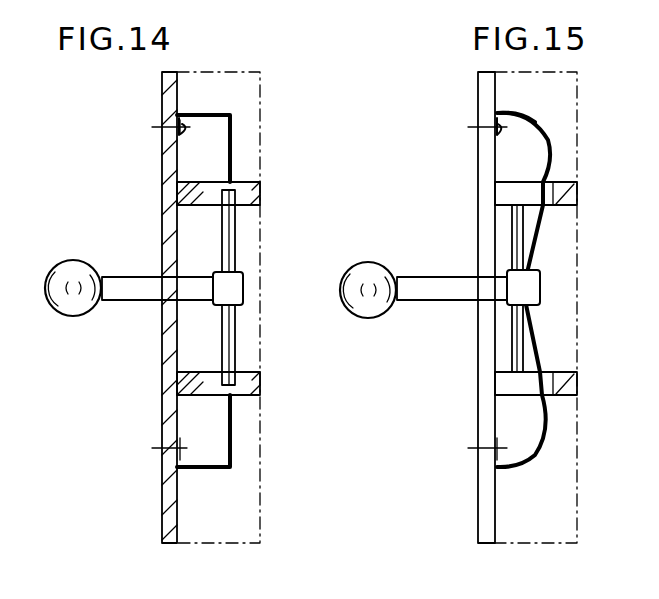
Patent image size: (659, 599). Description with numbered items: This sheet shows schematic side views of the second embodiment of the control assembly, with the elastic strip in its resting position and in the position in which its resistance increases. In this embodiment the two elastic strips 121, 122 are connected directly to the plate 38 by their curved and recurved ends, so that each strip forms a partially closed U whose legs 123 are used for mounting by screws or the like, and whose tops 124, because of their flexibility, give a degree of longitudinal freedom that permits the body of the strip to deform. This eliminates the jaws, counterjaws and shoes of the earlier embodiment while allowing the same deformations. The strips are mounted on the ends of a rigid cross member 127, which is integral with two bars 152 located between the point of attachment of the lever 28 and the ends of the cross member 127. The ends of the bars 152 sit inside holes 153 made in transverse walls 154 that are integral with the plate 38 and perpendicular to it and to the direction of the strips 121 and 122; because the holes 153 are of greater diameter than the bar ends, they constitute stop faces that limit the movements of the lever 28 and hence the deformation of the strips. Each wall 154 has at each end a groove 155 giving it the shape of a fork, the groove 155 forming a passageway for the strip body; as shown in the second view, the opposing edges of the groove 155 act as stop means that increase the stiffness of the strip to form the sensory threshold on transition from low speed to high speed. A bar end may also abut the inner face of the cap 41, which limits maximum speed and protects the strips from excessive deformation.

In FIG. 14, the lever 28 is at (123, 288).
In FIG. 15, the lever 28 is at (436, 292).
In FIG. 14, the plate 38 is at (165, 88).
In FIG. 15, the plate 38 is at (478, 506).
In FIG. 14, the cap 41 is at (258, 473).
In FIG. 14, the elastic strip 121 is at (235, 128).
In FIG. 15, the elastic strip 122 is at (550, 148).
In FIG. 14, the legs 123 is at (190, 130).
In FIG. 15, the legs 123 is at (496, 135).
In FIG. 14, the tops 124 is at (207, 115).
In FIG. 15, the tops 124 is at (525, 115).
In FIG. 14, the rigid cross member 127 is at (230, 288).
In FIG. 15, the rigid cross member 127 is at (525, 288).
In FIG. 14, the bars 152 is at (235, 240).
In FIG. 15, the bars 152 is at (517, 288).
In FIG. 14, the holes 153 is at (250, 388).
In FIG. 15, the holes 153 is at (536, 383).
In FIG. 14, the transverse walls 154 is at (257, 182).
In FIG. 15, the transverse walls 154 is at (573, 182).
In FIG. 15, the groove 155 is at (546, 206).